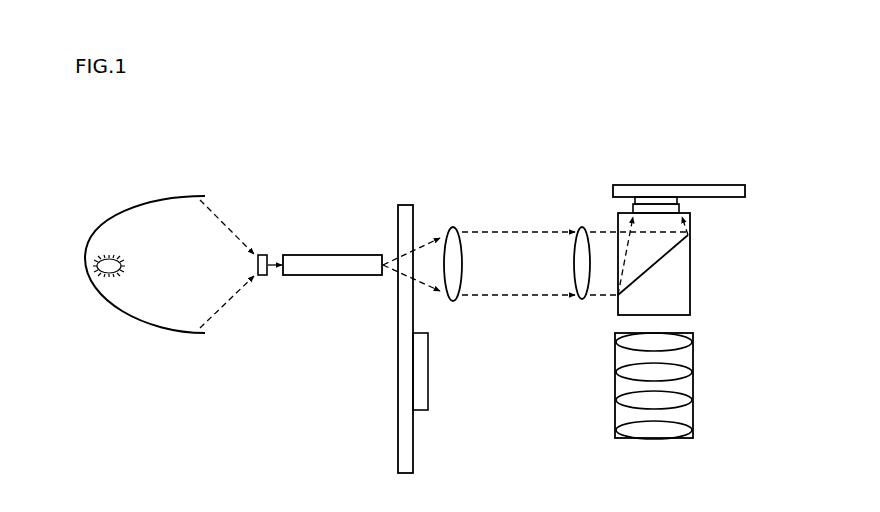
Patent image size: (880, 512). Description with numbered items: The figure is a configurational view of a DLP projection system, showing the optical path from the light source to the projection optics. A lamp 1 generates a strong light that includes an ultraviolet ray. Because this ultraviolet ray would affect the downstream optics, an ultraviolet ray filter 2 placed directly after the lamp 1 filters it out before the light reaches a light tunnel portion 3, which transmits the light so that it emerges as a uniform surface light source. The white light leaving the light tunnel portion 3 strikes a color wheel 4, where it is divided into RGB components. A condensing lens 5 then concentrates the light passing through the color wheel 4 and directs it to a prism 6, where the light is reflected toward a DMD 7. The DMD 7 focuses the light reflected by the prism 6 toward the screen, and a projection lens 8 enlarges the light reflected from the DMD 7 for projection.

The lamp 1 is at (142, 325).
The ultraviolet ray filter 2 is at (263, 277).
The light tunnel portion 3 is at (325, 253).
The color wheel 4 is at (398, 383).
The condensing lens 5 is at (453, 303).
The prism 6 is at (692, 257).
The DMD 7 is at (657, 200).
The projection lens 8 is at (693, 393).